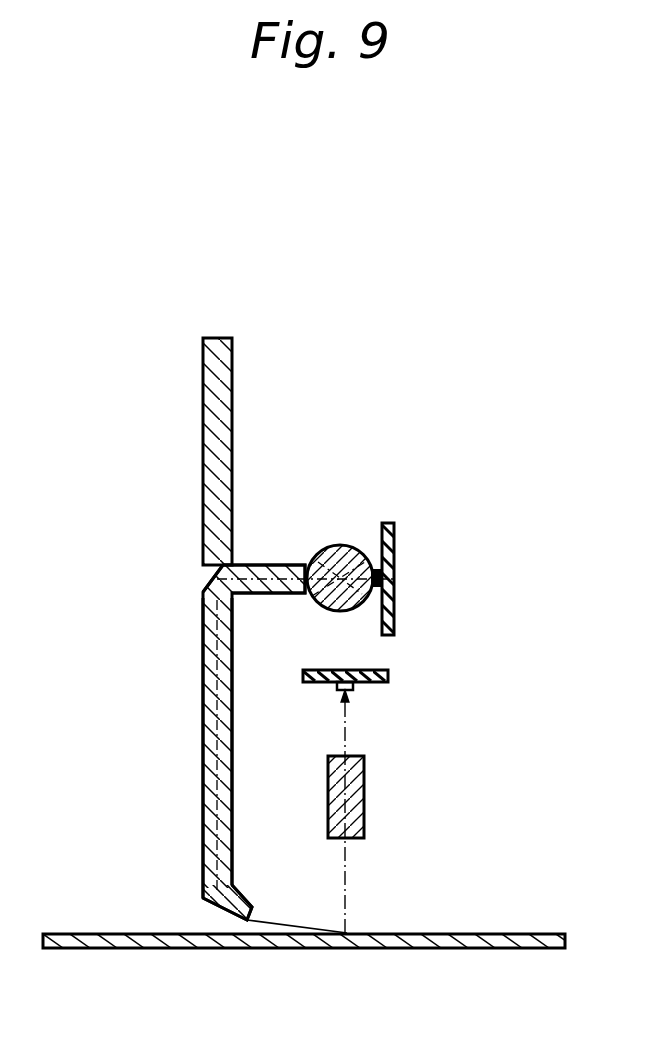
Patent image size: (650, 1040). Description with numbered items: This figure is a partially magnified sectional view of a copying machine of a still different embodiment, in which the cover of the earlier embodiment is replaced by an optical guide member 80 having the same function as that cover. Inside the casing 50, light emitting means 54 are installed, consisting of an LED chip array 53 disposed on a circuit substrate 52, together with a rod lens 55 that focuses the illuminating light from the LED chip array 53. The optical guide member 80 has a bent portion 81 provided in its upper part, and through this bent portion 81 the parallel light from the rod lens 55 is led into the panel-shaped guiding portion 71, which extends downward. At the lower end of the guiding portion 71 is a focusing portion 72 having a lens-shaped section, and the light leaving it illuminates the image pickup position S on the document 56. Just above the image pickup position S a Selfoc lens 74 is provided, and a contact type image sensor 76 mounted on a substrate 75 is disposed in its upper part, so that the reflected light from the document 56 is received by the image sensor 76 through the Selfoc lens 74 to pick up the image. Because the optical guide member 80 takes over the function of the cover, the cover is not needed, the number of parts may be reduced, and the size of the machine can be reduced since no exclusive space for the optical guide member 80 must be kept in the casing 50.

The casing 50 is at (213, 447).
The optical guide member 80 is at (259, 701).
The bent portion 81 is at (258, 570).
The guiding portion 71 is at (208, 788).
The focusing portion 72 is at (240, 898).
The rod lens 55 is at (318, 553).
The light emitting means 54 is at (450, 564).
The LED chip array 53 is at (394, 558).
The circuit substrate 52 is at (393, 590).
The substrate 75 is at (378, 678).
The contact type image sensor 76 is at (358, 690).
The Selfoc lens 74 is at (365, 800).
The document 56 is at (485, 947).
The image pickup position S is at (347, 933).